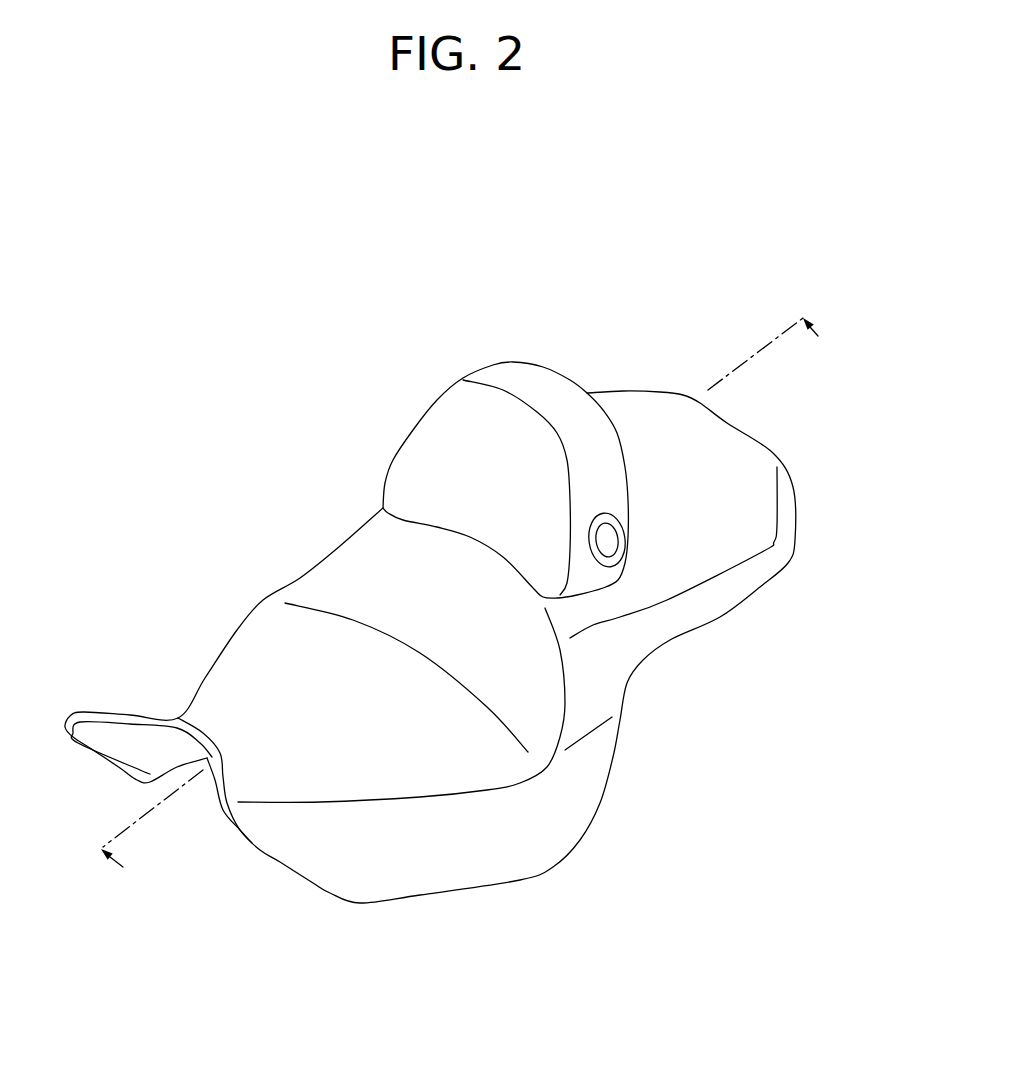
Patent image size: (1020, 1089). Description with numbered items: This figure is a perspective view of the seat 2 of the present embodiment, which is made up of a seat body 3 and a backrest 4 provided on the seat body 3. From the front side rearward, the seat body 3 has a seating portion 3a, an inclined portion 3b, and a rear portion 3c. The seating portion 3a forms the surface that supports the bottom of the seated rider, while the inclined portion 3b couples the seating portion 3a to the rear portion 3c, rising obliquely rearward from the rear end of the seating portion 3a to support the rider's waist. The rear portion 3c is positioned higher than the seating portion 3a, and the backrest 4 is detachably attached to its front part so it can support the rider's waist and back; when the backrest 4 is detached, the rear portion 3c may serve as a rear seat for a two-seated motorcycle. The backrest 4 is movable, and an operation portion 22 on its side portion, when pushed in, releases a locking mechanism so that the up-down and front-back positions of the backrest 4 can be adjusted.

The seat 2 is at (620, 212).
The seat body 3 is at (219, 540).
The seating portion 3a is at (221, 690).
The inclined portion 3b is at (325, 572).
The rear portion 3c is at (732, 517).
The backrest 4 is at (433, 433).
The operation portion 22 is at (608, 540).